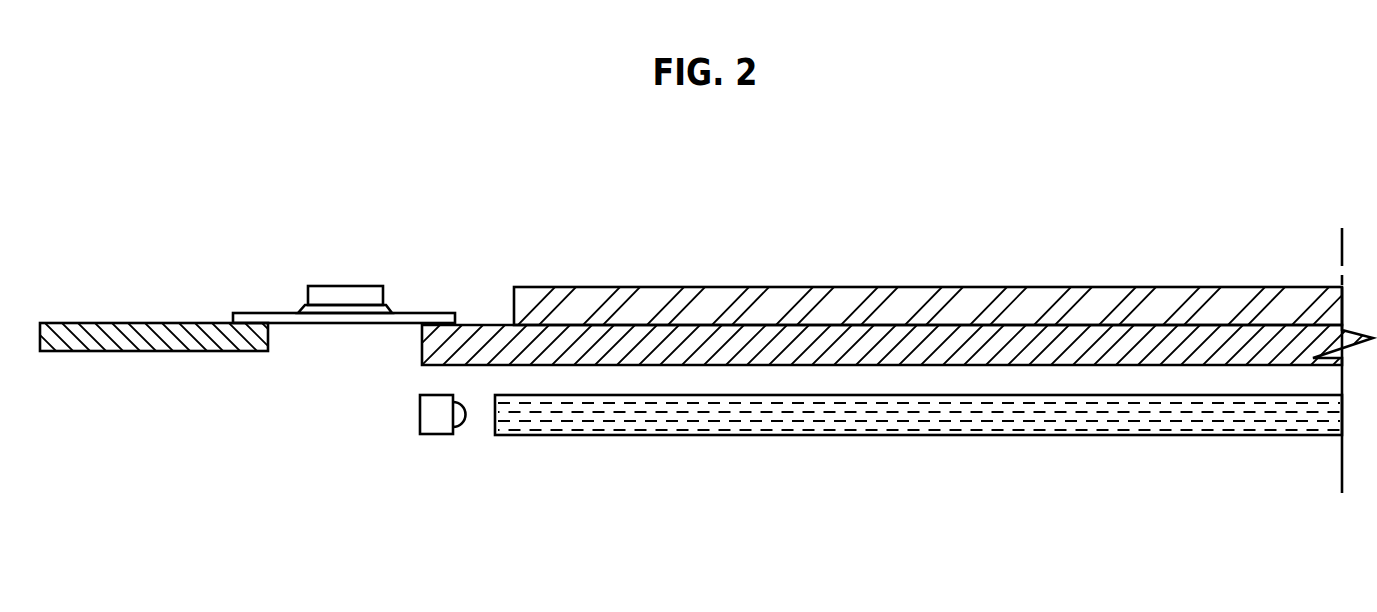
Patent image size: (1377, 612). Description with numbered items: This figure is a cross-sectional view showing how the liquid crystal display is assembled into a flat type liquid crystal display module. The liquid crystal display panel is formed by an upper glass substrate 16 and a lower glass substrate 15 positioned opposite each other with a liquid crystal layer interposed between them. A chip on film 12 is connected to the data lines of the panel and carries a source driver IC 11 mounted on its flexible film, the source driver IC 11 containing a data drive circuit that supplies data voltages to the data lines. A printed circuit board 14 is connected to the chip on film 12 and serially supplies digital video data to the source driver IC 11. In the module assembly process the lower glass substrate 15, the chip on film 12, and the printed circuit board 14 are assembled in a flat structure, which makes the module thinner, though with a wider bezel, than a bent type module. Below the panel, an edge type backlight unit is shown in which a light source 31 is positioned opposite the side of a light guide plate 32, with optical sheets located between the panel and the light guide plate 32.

The source driver IC 11 is at (343, 286).
The chip on film (COF) 12 is at (437, 313).
The printed circuit board (PCB) 14 is at (155, 349).
The lower glass substrate 15 is at (845, 345).
The upper glass substrate 16 is at (1028, 303).
The light source 31 is at (437, 435).
The light guide plate 32 is at (950, 423).